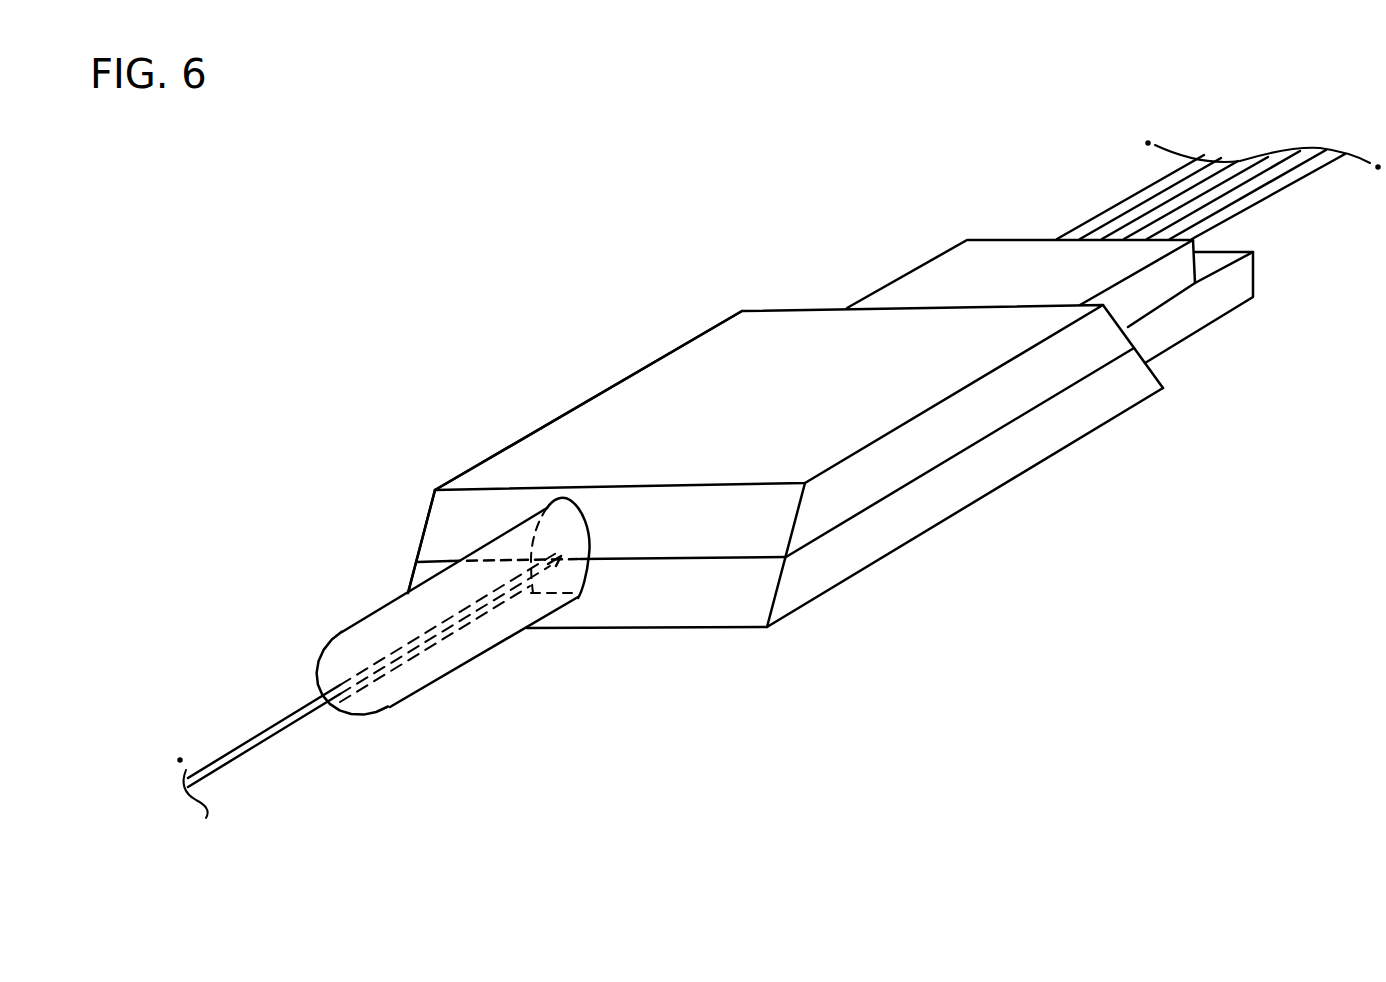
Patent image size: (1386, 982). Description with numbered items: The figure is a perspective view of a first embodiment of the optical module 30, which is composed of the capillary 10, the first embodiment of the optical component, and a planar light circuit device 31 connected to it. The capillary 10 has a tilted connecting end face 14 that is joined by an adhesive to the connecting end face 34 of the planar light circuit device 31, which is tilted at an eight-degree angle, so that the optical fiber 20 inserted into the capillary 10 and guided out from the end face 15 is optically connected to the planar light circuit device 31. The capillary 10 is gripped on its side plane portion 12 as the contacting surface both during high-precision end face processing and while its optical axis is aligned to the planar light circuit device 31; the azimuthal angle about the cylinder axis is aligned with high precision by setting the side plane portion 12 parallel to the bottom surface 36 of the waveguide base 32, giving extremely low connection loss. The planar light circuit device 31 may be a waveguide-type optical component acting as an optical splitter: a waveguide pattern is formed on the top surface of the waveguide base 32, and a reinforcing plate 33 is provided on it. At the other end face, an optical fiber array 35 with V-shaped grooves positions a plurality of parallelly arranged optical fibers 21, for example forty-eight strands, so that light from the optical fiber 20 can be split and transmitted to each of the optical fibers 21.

The capillary 10 is at (400, 590).
The side plane portion 12 is at (436, 646).
The connecting end face 14 is at (592, 572).
The end face 15 is at (345, 658).
The optical fiber 20 is at (263, 747).
The optical fibers 21 is at (1140, 208).
The optical module 30 is at (833, 466).
The planar light circuit device 31 is at (656, 362).
The waveguide base 32 is at (965, 499).
The reinforcing plate 33 is at (773, 368).
The connecting end face 34 is at (705, 600).
The optical fiber array 35 is at (1217, 298).
The bottom surface 36 is at (860, 573).